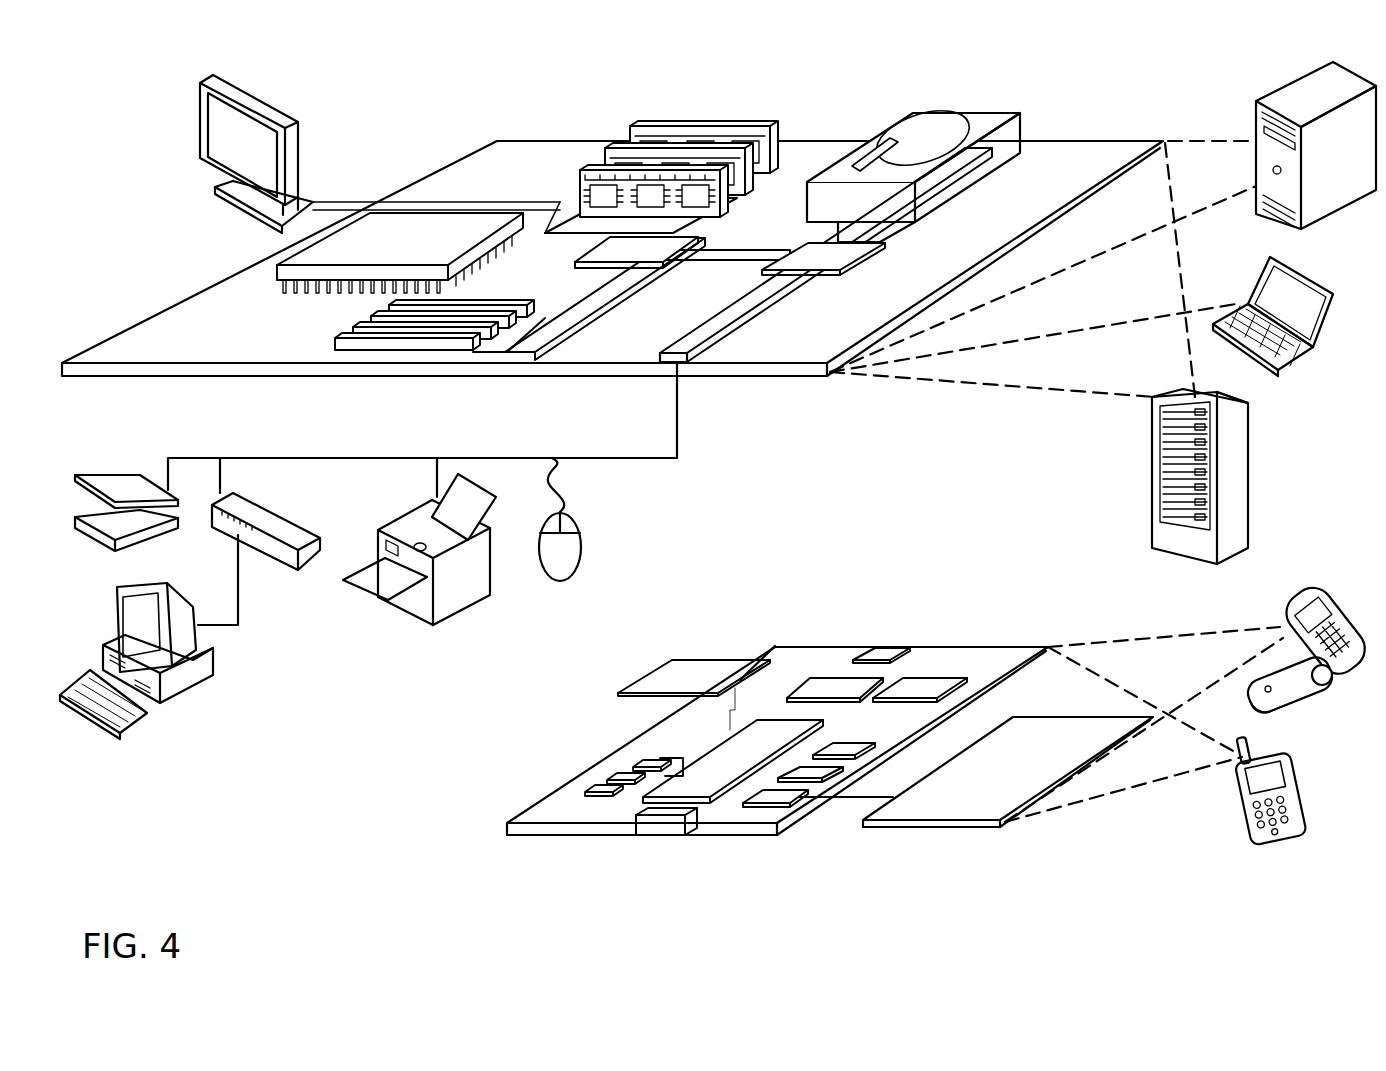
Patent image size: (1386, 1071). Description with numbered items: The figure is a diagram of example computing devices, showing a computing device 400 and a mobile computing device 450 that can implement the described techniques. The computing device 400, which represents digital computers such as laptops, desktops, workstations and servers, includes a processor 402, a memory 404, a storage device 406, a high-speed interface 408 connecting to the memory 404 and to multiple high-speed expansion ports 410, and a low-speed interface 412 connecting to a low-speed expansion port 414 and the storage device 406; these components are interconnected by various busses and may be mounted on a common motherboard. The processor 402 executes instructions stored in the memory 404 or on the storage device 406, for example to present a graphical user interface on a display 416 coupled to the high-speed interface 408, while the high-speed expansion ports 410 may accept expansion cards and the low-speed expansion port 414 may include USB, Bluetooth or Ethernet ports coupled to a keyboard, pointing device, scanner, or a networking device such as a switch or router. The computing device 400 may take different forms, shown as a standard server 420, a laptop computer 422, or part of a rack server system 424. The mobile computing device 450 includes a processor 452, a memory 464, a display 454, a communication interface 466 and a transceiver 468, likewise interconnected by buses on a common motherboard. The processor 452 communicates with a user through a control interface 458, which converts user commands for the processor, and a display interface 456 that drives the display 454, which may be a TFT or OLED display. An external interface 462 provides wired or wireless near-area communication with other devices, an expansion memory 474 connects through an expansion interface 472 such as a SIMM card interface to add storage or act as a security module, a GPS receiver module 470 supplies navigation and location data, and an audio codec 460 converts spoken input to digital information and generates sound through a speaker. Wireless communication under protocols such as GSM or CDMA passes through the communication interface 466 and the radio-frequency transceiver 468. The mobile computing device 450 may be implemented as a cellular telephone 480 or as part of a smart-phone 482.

The computing device 400 is at (420, 110).
The processor 402 is at (277, 270).
The memory 404 is at (655, 134).
The storage device 406 is at (905, 118).
The high-speed interface 408 is at (610, 254).
The high-speed expansion ports 410 is at (385, 334).
The low-speed interface 412 is at (800, 245).
The low-speed expansion port 414 is at (690, 363).
The display 416 is at (205, 82).
The standard server 420 is at (1254, 120).
The laptop computer 422 is at (1305, 372).
The rack server system 424 is at (1152, 492).
The mobile computing device 450 is at (485, 835).
The processor 452 is at (702, 790).
The display 454 is at (962, 808).
The display interface 456 is at (778, 795).
The control interface 458 is at (817, 772).
The audio codec 460 is at (843, 748).
The external interface 462 is at (662, 823).
The memory 464 is at (612, 790).
The communication interface 466 is at (832, 690).
The transceiver 468 is at (920, 688).
The GPS receiver module 470 is at (880, 655).
The expansion interface 472 is at (757, 658).
The expansion memory 474 is at (672, 663).
The cellular telephone 480 is at (1290, 625).
The smart-phone 482 is at (1242, 760).